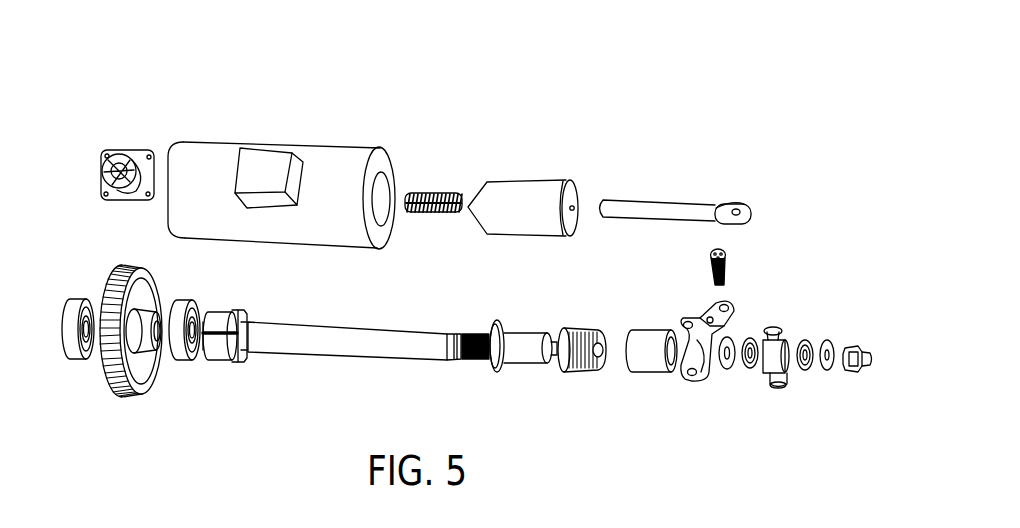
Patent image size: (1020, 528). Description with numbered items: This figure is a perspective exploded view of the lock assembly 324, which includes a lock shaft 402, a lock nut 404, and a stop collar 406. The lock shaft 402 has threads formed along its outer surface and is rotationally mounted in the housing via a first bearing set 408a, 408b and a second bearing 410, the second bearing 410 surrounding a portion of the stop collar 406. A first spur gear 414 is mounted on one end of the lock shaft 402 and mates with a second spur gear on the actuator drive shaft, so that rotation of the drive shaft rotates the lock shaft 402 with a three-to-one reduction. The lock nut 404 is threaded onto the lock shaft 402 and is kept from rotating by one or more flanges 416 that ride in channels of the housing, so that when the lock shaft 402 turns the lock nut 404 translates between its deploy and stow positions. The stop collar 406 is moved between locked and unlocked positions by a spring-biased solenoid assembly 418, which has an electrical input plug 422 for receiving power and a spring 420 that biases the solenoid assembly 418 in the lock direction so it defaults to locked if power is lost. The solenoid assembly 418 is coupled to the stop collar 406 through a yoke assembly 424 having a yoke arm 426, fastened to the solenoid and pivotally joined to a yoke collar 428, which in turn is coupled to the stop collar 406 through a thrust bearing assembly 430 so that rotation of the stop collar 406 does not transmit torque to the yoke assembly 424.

The lock assembly 324 is at (620, 97).
The spring-biased solenoid assembly 418 is at (751, 142).
The electrical input plug 422 is at (100, 172).
The first spur gear 414 is at (135, 265).
The first bearing set 408a is at (75, 298).
The first bearing set 408b is at (181, 299).
The lock nut 404 is at (236, 316).
The flanges 416 is at (223, 350).
The lock shaft 402 is at (340, 325).
The stop collar 406 is at (525, 333).
The second bearing 410 is at (678, 375).
The spring 420 is at (435, 214).
The yoke assembly 424 is at (750, 302).
The yoke arm 426 is at (705, 306).
The yoke collar 428 is at (696, 380).
The thrust bearing assembly 430 is at (785, 342).